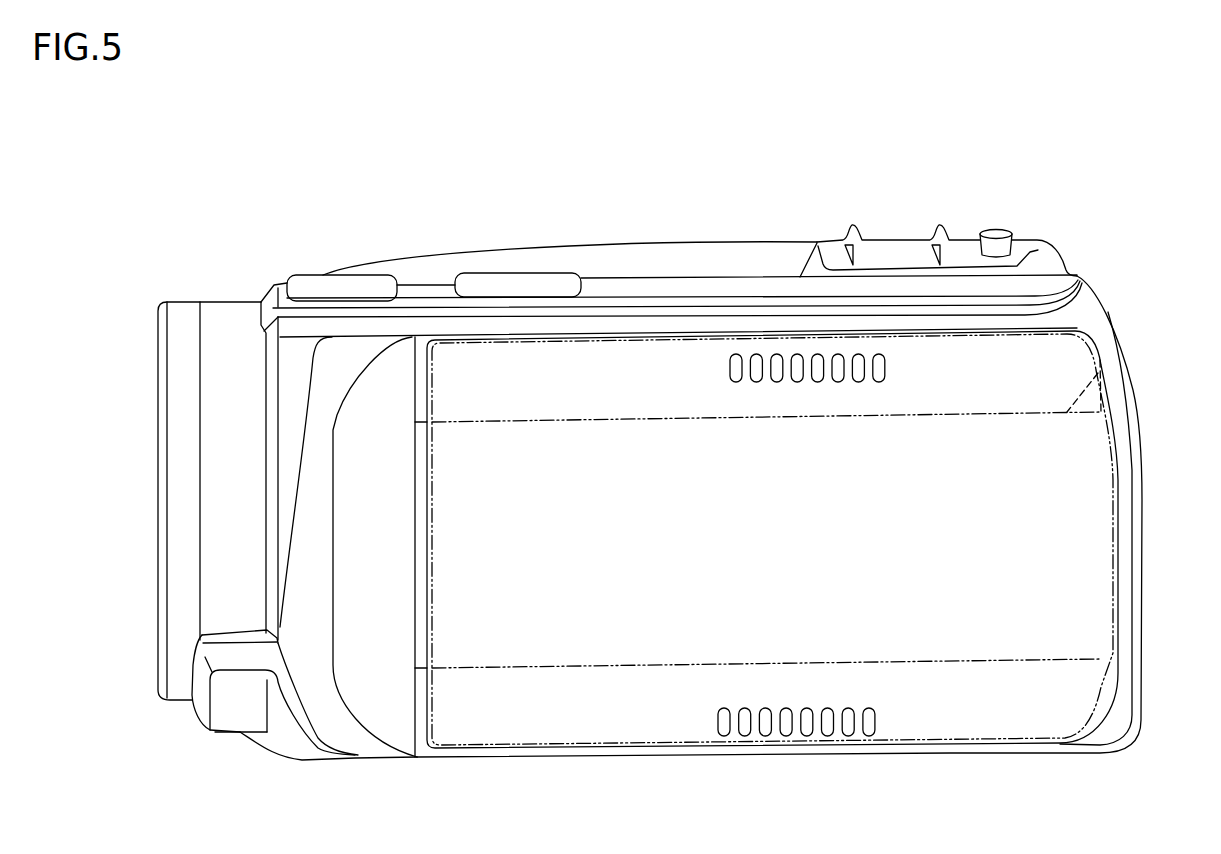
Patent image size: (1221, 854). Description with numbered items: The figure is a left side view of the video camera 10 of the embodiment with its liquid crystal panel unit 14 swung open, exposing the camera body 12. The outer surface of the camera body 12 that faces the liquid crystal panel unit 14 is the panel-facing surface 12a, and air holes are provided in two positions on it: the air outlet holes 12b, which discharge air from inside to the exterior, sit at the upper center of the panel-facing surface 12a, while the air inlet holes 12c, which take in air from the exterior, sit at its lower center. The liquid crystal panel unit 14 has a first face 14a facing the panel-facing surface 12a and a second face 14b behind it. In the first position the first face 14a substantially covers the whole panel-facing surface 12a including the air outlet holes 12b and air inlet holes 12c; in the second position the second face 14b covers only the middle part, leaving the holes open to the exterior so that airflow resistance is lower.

The video camera 10 is at (1093, 240).
The camera body 12 is at (740, 242).
The panel-facing surface 12a is at (640, 373).
The air outlet holes 12b is at (887, 365).
The air inlet holes 12c is at (878, 717).
The liquid crystal panel unit 14 is at (363, 370).
The first face 14a is at (1082, 726).
The second face 14b is at (1098, 373).